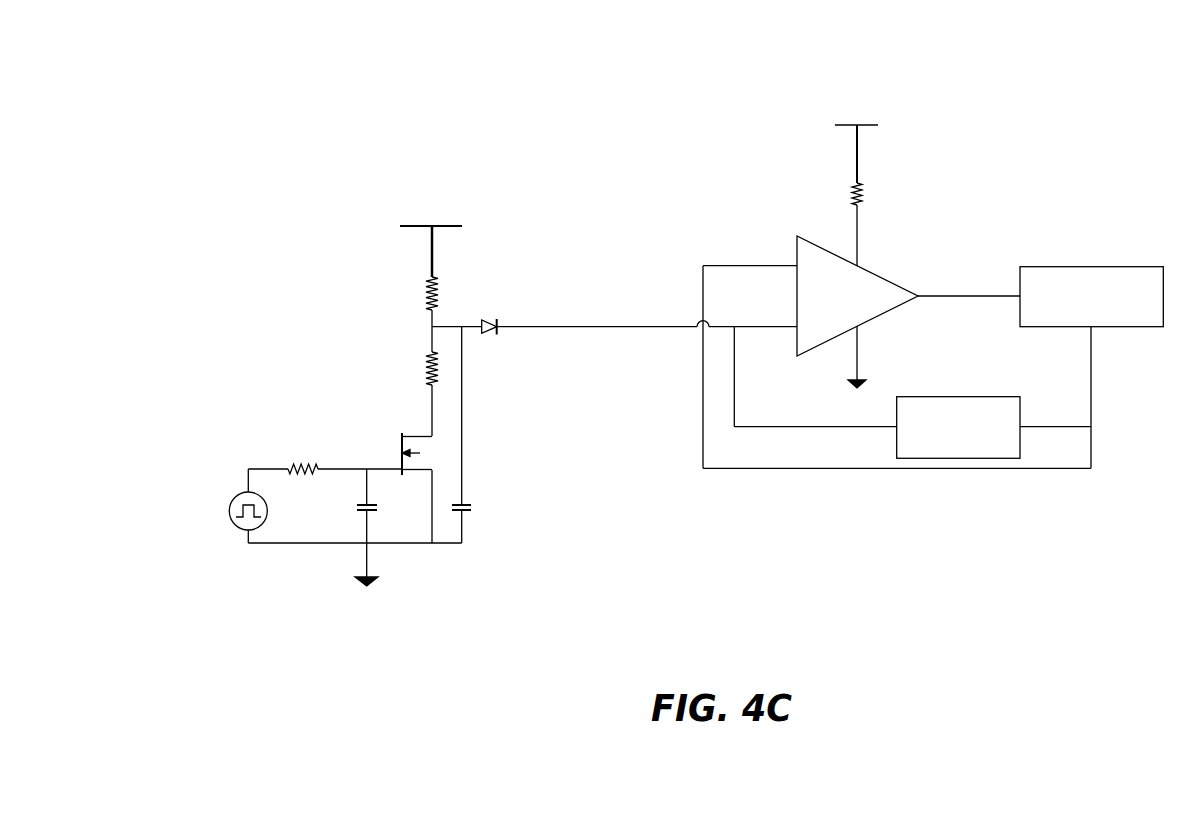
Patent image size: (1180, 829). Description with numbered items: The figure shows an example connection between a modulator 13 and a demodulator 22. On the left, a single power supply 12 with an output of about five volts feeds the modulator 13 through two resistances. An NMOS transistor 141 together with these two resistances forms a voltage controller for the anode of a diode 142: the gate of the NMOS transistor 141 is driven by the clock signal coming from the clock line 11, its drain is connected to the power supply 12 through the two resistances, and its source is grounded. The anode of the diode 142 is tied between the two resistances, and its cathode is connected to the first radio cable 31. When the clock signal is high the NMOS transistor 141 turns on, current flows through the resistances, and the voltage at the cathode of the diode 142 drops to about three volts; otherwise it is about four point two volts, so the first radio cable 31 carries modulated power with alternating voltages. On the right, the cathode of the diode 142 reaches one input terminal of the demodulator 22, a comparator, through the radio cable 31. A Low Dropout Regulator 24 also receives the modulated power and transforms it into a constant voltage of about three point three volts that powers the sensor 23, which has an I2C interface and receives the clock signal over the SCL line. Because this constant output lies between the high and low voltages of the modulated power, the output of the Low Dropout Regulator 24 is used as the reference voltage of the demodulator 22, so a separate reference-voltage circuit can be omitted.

The clock line 11 is at (232, 502).
The power supply 12 is at (457, 222).
The modulator 13 is at (354, 388).
The NMOS transistor 141 is at (401, 443).
The diode 142 is at (487, 320).
The first radio cable 31 is at (572, 311).
The demodulator 22 is at (864, 281).
The sensor 23 is at (1108, 270).
The Low Dropout Regulator 24 is at (945, 410).